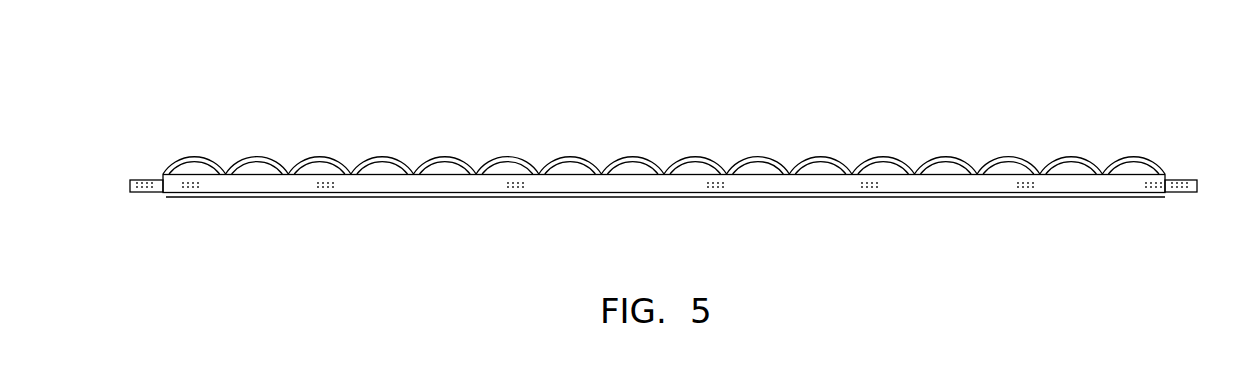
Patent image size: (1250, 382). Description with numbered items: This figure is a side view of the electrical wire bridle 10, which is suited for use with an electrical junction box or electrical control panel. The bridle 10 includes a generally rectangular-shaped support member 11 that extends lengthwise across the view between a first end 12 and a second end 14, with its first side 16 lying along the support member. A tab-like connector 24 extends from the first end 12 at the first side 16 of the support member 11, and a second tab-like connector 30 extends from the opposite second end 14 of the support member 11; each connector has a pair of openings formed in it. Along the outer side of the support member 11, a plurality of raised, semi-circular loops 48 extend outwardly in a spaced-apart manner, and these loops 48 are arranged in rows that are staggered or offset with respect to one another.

The electrical wire bridle 10 is at (903, 139).
The support member 11 is at (352, 173).
The first end 12 is at (163, 177).
The second end 14 is at (1168, 177).
The first side 16 is at (792, 187).
The tab-like connector 24 is at (143, 197).
The tab-like connector 30 is at (1179, 193).
The raised semi-circular loops 48 is at (568, 158).